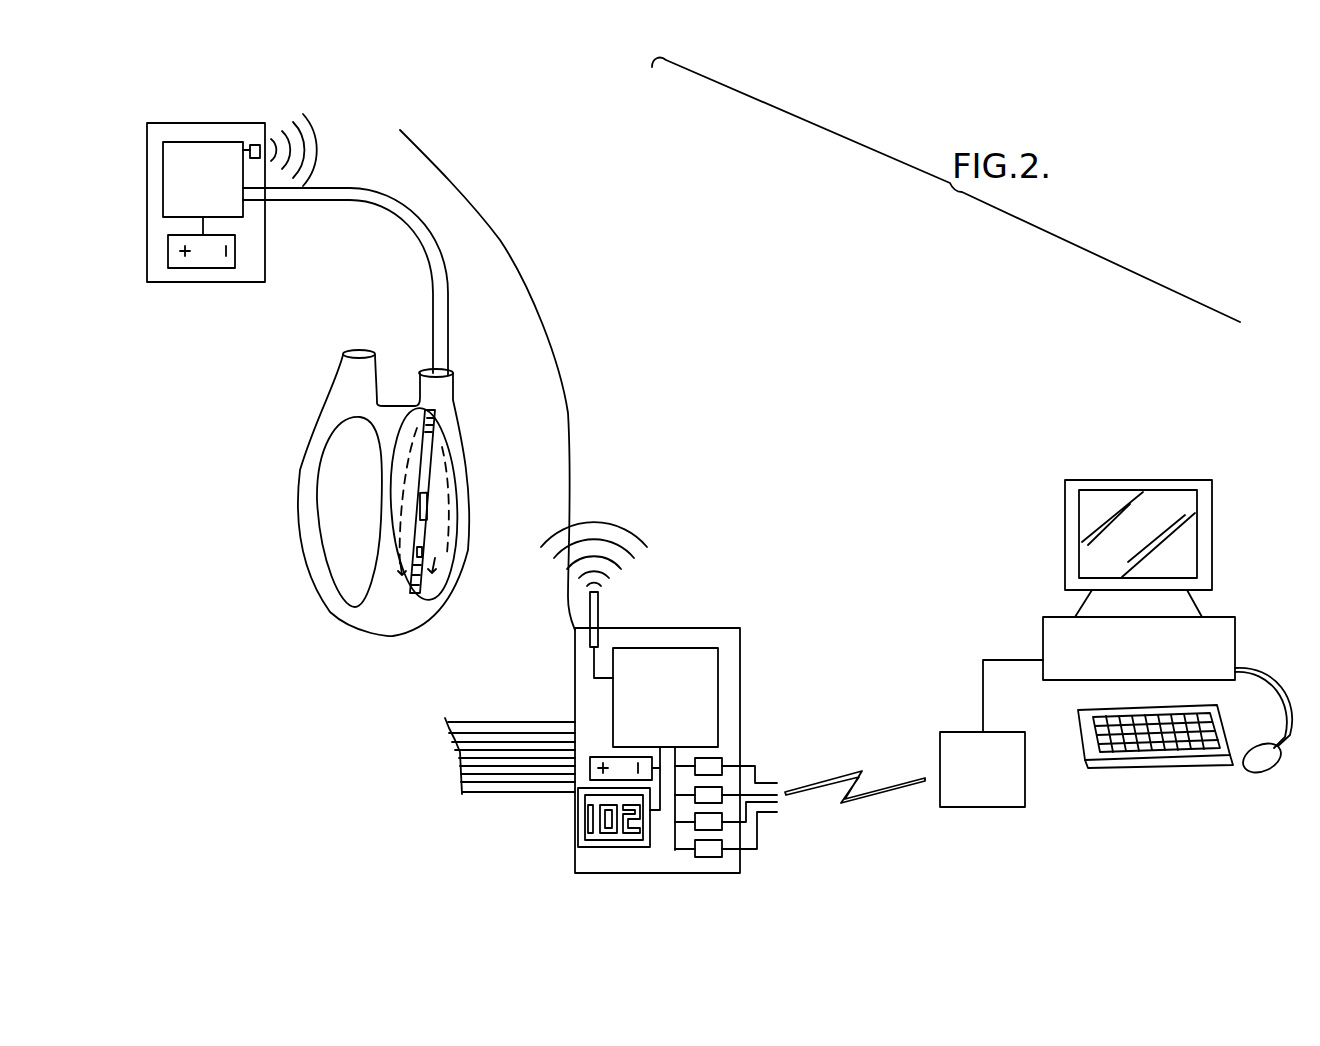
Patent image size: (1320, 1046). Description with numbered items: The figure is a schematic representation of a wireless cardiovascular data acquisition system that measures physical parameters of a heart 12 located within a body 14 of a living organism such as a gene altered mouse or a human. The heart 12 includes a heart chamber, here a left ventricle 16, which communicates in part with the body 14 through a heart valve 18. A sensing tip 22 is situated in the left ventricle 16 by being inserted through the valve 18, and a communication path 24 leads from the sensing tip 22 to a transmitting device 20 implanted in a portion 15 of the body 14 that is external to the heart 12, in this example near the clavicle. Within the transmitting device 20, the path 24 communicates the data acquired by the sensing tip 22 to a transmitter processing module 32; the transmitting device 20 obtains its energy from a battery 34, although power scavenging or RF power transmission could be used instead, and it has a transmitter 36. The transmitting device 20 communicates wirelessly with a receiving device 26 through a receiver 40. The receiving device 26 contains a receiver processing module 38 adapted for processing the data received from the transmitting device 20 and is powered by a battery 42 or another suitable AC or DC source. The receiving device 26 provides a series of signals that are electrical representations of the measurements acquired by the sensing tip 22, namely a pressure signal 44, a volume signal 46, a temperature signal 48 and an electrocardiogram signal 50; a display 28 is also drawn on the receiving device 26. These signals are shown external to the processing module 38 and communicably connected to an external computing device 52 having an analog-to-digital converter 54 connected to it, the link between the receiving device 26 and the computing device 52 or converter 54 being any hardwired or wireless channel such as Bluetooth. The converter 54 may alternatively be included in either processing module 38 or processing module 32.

The heart 12 is at (395, 352).
The body 14 is at (475, 175).
The portion of the body 15 is at (140, 108).
The left ventricle 16 is at (443, 557).
The heart valve 18 is at (443, 395).
The transmitting device 20 is at (230, 121).
The sensing tip 22 is at (428, 466).
The communication path 24 is at (350, 203).
The receiving device 26 is at (735, 626).
The display 28 is at (572, 793).
The transmitter processing module 32 is at (168, 190).
The battery 34 is at (180, 268).
The transmitter 36 is at (257, 145).
The receiver processing module 38 is at (710, 683).
The receiver 40 is at (600, 604).
The battery 42 is at (617, 765).
The pressure signal 44 is at (713, 762).
The volume signal 46 is at (713, 788).
The temperature signal 48 is at (713, 822).
The electrocardiogram signal 50 is at (708, 853).
The external computing device 52 is at (1230, 585).
The analog-to-digital converter 54 is at (968, 795).